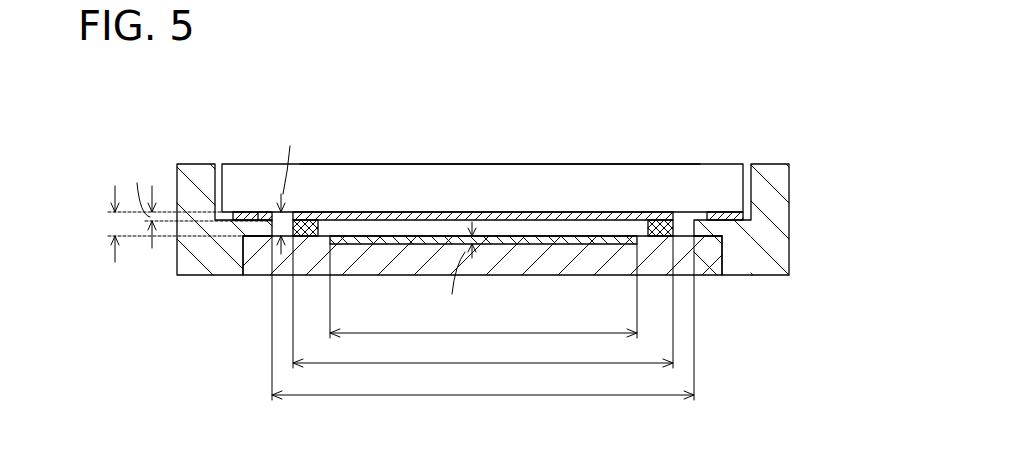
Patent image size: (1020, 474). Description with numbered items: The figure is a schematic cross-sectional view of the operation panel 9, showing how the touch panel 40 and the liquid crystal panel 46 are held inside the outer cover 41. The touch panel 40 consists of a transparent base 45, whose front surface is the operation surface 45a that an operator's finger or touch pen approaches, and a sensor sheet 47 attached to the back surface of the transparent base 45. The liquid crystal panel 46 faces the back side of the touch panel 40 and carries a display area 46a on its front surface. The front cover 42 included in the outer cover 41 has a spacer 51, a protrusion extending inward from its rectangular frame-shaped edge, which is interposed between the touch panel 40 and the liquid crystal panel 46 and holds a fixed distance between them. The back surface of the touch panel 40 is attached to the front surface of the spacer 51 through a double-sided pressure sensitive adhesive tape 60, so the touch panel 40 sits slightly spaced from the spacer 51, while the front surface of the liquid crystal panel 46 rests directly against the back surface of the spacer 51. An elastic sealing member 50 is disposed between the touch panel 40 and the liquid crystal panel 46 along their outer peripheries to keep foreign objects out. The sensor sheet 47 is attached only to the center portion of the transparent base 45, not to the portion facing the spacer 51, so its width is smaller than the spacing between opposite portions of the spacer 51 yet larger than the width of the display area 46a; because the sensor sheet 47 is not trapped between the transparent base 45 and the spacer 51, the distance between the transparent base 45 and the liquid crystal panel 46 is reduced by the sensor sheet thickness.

The operation panel 9 is at (612, 122).
The touch panel 40 is at (585, 117).
The outer cover 41 is at (476, 215).
The front cover 42 is at (193, 164).
The transparent base 45 is at (570, 182).
The operation surface 45a is at (467, 164).
The liquid crystal panel 46 is at (569, 262).
The display area 46a is at (406, 235).
The sensor sheet 47 is at (528, 218).
The sealing member 50 is at (312, 224).
The spacer 51 is at (258, 237).
The double-sided pressure sensitive adhesive tape 60 is at (240, 212).